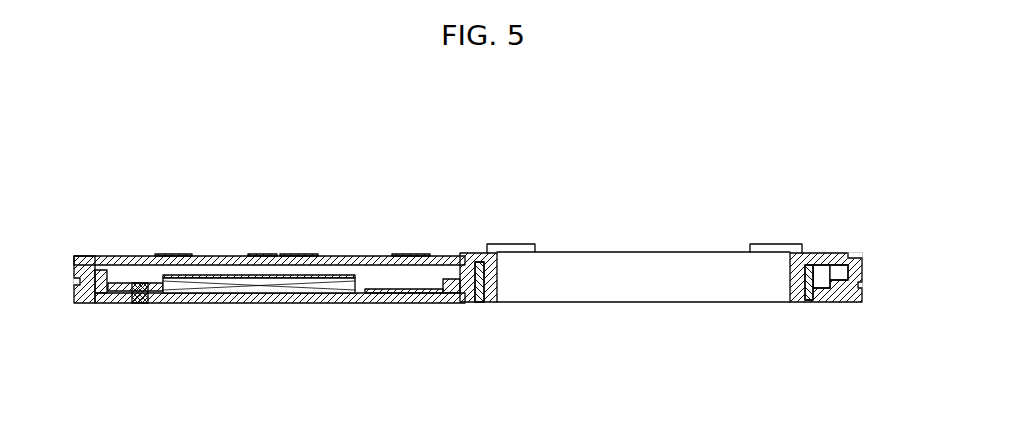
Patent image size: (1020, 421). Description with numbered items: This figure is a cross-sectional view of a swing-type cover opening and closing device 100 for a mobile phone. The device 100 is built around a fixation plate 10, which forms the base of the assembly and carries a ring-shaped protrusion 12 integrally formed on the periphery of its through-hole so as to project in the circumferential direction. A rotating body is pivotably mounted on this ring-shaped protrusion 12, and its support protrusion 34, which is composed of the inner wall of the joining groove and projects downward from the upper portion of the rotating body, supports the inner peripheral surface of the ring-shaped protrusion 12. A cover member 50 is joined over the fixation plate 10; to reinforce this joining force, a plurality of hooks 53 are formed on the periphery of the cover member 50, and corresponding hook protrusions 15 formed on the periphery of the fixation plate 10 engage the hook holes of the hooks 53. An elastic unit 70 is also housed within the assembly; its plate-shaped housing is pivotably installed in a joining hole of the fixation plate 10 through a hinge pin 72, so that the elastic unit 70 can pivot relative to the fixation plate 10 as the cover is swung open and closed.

The swing-type cover opening and closing device 100 is at (485, 118).
The cover member 50 is at (349, 256).
The elastic unit 70 is at (231, 274).
The hinge pin 72 is at (137, 304).
The fixation plate 10 is at (339, 304).
The support protrusion 34 is at (497, 288).
The ring-shaped protrusion 12 is at (790, 286).
The hook protrusion 15 is at (862, 262).
The hook 53 is at (862, 286).